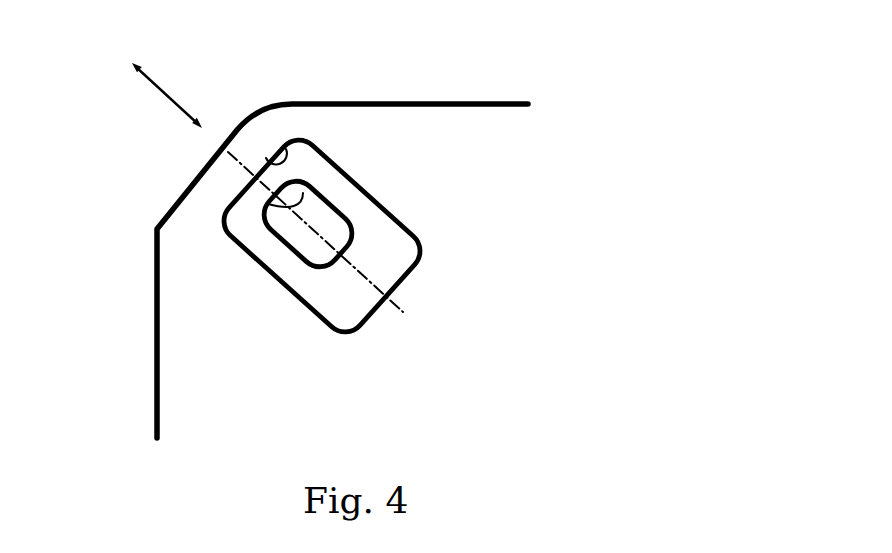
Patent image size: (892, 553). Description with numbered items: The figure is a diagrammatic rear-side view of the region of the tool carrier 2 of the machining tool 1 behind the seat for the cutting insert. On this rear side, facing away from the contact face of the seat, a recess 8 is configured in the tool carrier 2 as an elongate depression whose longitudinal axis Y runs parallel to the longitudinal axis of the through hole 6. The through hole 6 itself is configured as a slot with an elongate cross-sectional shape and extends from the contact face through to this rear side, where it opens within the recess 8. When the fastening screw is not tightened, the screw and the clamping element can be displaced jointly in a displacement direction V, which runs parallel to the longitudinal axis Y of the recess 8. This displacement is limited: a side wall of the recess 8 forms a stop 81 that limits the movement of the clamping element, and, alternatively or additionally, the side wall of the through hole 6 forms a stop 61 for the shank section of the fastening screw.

The machining tool 1 is at (117, 167).
The tool carrier 2 is at (428, 142).
The through hole 6 is at (310, 205).
The stop 61 is at (303, 193).
The recess 8 is at (347, 298).
The stop 81 is at (286, 149).
The displacement direction V is at (182, 107).
The longitudinal axis Y is at (310, 225).